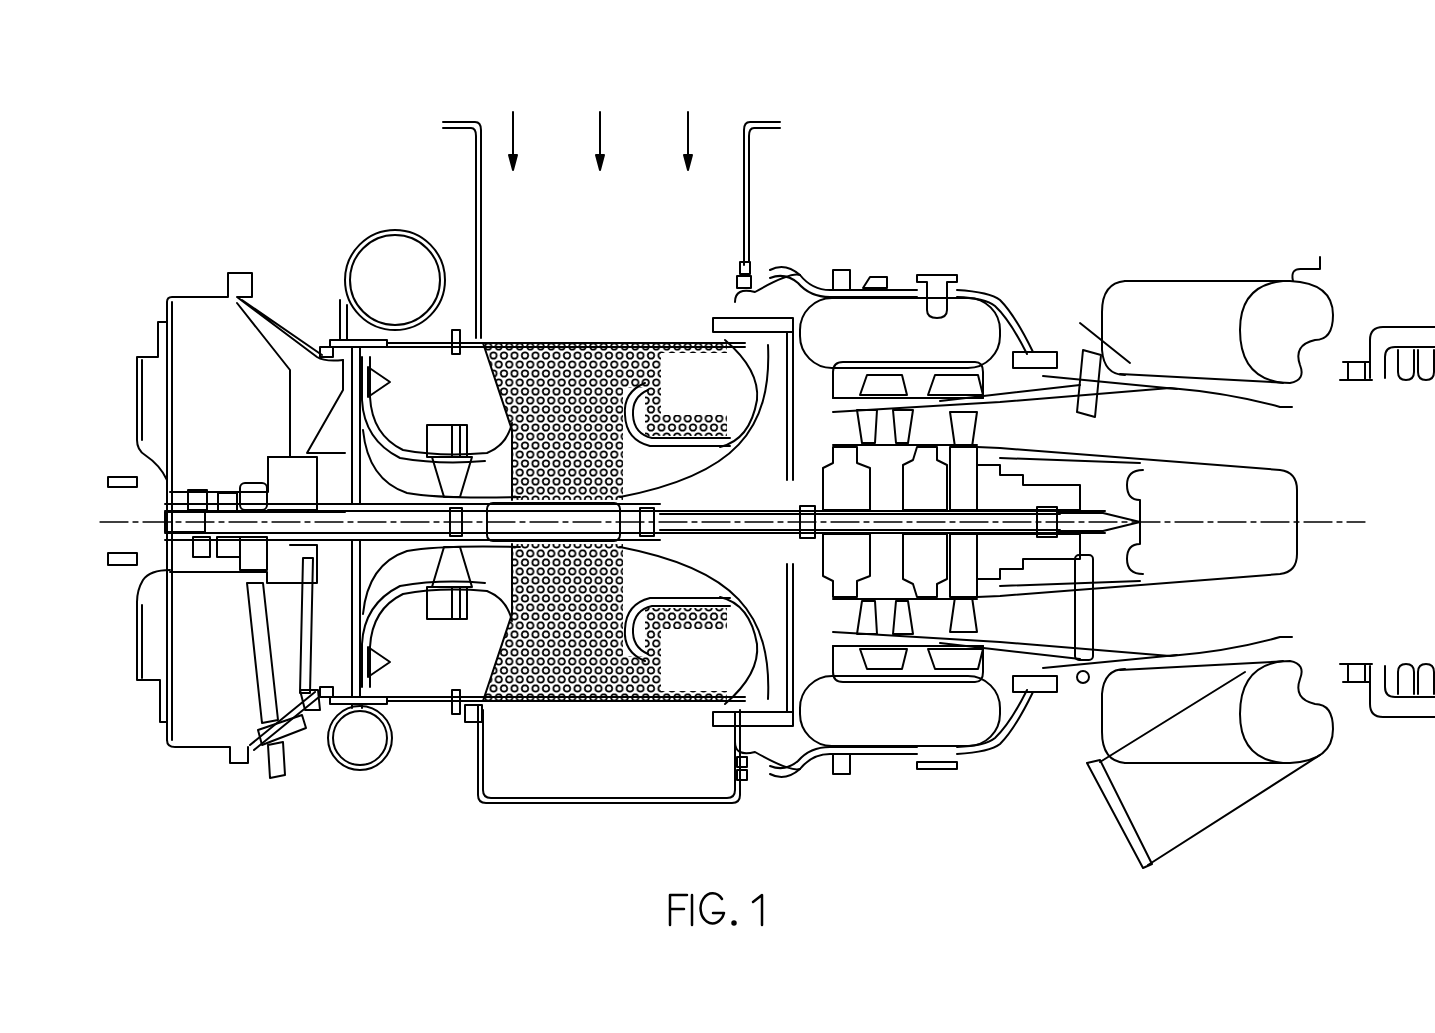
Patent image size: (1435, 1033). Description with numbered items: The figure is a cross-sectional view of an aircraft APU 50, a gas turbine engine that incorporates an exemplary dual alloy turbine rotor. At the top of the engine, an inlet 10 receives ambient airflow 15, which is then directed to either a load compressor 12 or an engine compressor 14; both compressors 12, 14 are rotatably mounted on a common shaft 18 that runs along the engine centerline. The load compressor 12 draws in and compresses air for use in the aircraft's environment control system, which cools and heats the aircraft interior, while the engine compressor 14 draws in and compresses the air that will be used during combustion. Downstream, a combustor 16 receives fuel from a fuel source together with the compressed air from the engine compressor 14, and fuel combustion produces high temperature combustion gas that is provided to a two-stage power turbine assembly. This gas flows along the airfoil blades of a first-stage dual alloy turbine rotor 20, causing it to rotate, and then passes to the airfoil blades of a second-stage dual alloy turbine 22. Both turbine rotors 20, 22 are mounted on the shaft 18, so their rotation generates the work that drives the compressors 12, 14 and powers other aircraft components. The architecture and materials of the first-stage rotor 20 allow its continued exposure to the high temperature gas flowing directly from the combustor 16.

The inlet 10 is at (750, 150).
The load compressor 12 is at (368, 560).
The engine compressor 14 is at (722, 553).
The ambient airflow 15 is at (710, 108).
The combustor 16 is at (924, 348).
The shaft 18 is at (746, 513).
The first-stage dual alloy turbine rotor 20 is at (898, 501).
The second-stage dual alloy turbine 22 is at (953, 490).
The aircraft APU 50 is at (203, 830).